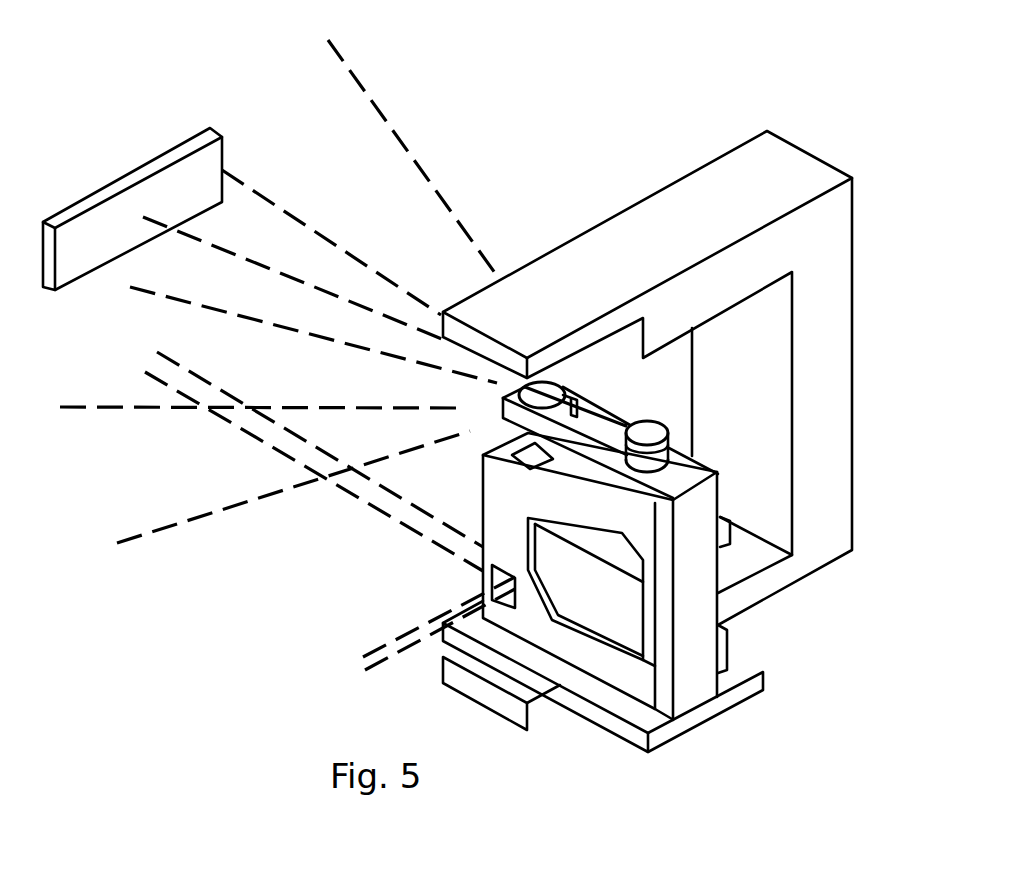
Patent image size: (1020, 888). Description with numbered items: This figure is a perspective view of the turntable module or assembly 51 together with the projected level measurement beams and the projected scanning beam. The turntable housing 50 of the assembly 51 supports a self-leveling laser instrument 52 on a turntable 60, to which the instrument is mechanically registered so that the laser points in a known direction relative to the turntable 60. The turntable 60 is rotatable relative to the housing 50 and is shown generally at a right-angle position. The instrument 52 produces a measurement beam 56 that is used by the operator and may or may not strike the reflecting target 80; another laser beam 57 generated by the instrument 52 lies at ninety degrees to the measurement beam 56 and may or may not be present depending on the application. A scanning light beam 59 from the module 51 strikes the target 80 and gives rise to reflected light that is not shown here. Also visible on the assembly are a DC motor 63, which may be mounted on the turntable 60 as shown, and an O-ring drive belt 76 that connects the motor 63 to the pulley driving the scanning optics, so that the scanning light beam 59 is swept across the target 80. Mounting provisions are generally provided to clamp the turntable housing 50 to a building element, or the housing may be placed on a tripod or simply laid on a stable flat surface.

The turntable housing 50 is at (765, 603).
The turntable module or assembly 51 is at (667, 88).
The self-leveling laser instrument 52 is at (484, 508).
The measurement beam 56 is at (277, 448).
The laser beam 57 is at (404, 634).
The scanning light beam 59 is at (292, 218).
The turntable 60 is at (707, 725).
The DC motor 63 is at (663, 421).
The O-ring drive belt 76 is at (624, 421).
The reflecting target 80 is at (163, 155).